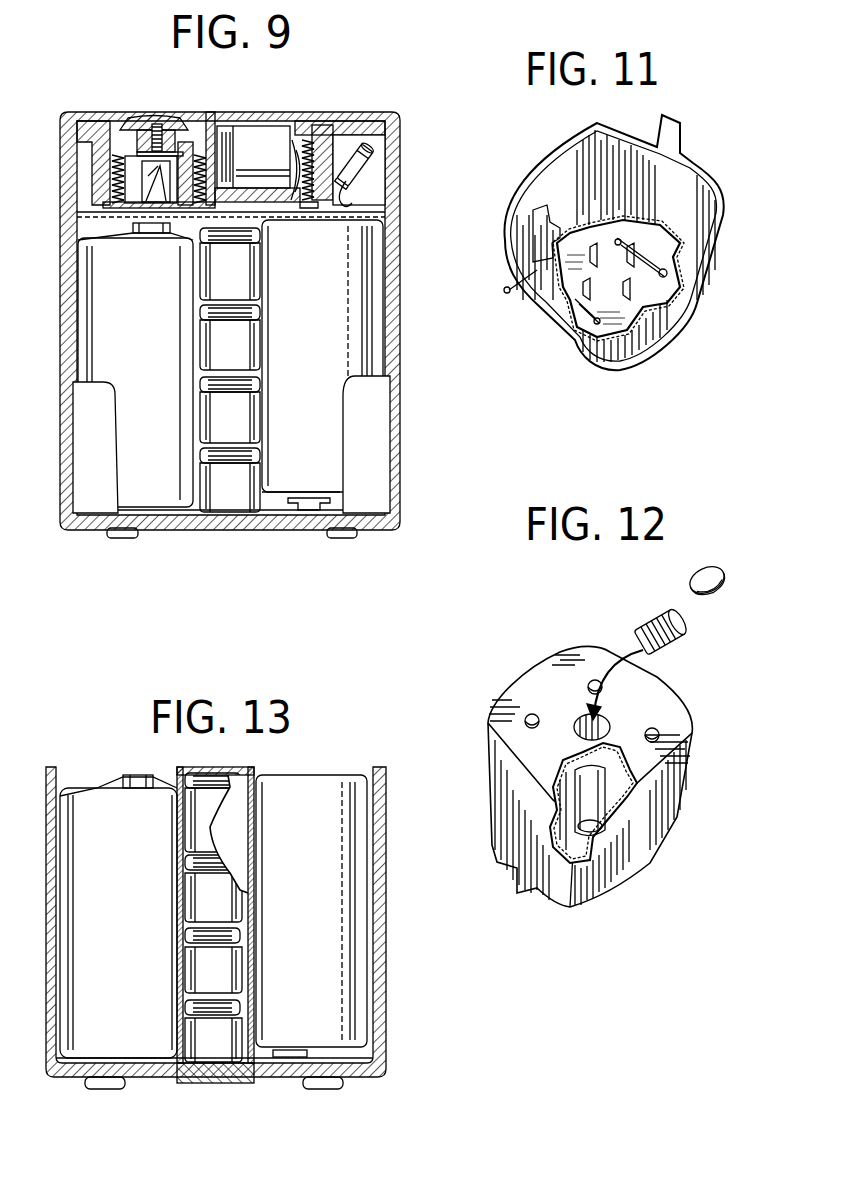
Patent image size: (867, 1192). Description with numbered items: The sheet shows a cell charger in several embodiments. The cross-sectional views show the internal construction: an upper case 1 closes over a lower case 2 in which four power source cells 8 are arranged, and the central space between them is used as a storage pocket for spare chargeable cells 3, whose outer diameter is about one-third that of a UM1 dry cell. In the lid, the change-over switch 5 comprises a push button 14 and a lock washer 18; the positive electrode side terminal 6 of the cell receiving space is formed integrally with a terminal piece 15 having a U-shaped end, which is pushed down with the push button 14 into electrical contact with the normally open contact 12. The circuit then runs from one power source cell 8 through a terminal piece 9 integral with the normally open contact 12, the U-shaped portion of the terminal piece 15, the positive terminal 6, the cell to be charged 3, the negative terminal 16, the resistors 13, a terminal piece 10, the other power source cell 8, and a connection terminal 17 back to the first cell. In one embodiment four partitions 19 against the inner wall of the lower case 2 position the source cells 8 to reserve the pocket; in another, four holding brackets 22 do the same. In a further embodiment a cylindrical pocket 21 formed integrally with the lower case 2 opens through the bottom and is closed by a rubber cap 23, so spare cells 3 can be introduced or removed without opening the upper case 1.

In FIG. 9, the upper case 1 is at (392, 112).
In FIG. 9, the lower case 2 is at (400, 349).
In FIG. 11, the lower case 2 is at (513, 263).
In FIG. 12, the lower case 2 is at (500, 793).
In FIG. 13, the lower case 2 is at (216, 928).
In FIG. 9, the cell to be charged 3 is at (256, 133).
In FIG. 12, the cell to be charged 3 is at (595, 827).
In FIG. 13, the cell to be charged 3 is at (230, 902).
In FIG. 9, the change-over switch 5 is at (133, 118).
In FIG. 9, the positive electrode side terminal 6 is at (210, 140).
In FIG. 9, the power source cell 8 is at (83, 320).
In FIG. 13, the power source cell 8 is at (80, 853).
In FIG. 9, the terminal piece 9 is at (132, 210).
In FIG. 9, the terminal piece 10 is at (330, 217).
In FIG. 9, the normally open contact 12 is at (158, 170).
In FIG. 9, the resistors 13 is at (368, 168).
In FIG. 9, the push button 14 is at (157, 128).
In FIG. 9, the terminal piece 15 is at (188, 203).
In FIG. 9, the negative terminal 16 is at (291, 153).
In FIG. 9, the connection terminal 17 is at (278, 512).
In FIG. 11, the connection terminal 17 is at (667, 233).
In FIG. 9, the lock washer 18 is at (184, 140).
In FIG. 9, the partitions 19 is at (80, 452).
In FIG. 12, the cylindrical pocket 21 is at (580, 833).
In FIG. 13, the cylindrical pocket 21 is at (177, 826).
In FIG. 11, the holding brackets 22 is at (620, 236).
In FIG. 12, the cap 23 is at (690, 588).
In FIG. 13, the cap 23 is at (200, 1075).